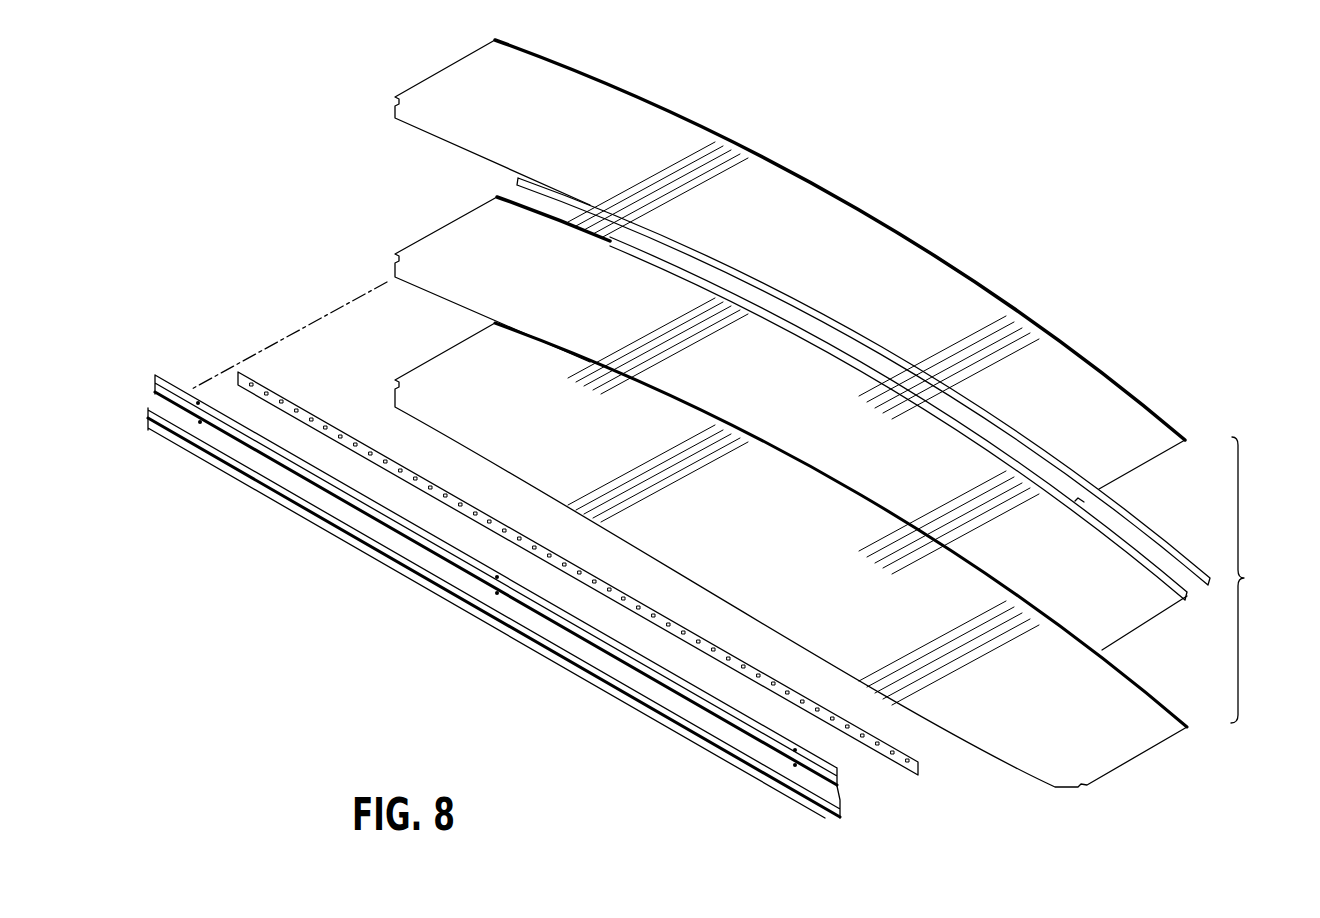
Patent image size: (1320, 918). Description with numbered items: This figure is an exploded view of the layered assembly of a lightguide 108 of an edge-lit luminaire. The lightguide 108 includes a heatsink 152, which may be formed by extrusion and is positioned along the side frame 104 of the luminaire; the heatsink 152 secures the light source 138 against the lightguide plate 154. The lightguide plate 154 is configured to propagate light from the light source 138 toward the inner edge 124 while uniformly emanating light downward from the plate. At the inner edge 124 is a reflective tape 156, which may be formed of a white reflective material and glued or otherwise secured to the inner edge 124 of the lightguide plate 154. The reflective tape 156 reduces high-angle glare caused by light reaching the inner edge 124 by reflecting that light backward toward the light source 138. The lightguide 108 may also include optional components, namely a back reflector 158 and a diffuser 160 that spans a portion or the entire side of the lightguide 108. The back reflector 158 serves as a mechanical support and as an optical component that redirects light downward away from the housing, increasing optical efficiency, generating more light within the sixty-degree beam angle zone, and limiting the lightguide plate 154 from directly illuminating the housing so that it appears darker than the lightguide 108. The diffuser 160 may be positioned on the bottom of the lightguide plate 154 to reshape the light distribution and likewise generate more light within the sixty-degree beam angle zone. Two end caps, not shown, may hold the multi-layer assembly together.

The side frame 104 is at (386, 563).
The lightguide 108 is at (1261, 580).
The inner edge 124 is at (892, 348).
The light source 138 is at (343, 427).
The heatsink 152 is at (185, 447).
The lightguide plate 154 is at (845, 430).
The reflective tape 156 is at (1137, 516).
The back reflector 158 is at (820, 245).
The diffuser 160 is at (810, 564).